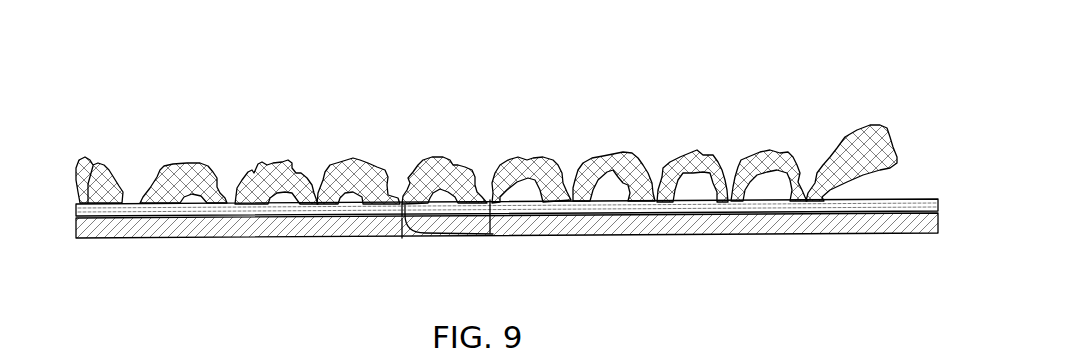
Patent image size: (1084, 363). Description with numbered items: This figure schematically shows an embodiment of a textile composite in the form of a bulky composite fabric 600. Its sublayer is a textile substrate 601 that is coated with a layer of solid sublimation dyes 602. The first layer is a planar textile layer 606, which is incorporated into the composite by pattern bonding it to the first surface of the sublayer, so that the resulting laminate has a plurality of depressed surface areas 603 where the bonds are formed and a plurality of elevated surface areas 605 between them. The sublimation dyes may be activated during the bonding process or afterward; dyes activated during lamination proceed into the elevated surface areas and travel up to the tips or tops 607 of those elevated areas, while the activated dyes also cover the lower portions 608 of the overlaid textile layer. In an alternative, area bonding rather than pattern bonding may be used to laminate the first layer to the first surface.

The bulky composite fabric 600 is at (852, 40).
The textile substrate 601 is at (100, 239).
The layer of solid sublimation dyes 602 is at (80, 201).
The depressed surface areas 603 is at (233, 203).
The elevated surface areas 605 is at (445, 154).
The planar textile layer 606 is at (860, 147).
The tips or tops of the elevated surface areas 607 is at (697, 150).
The lower portions of the overlaid textile layer 608 is at (286, 197).